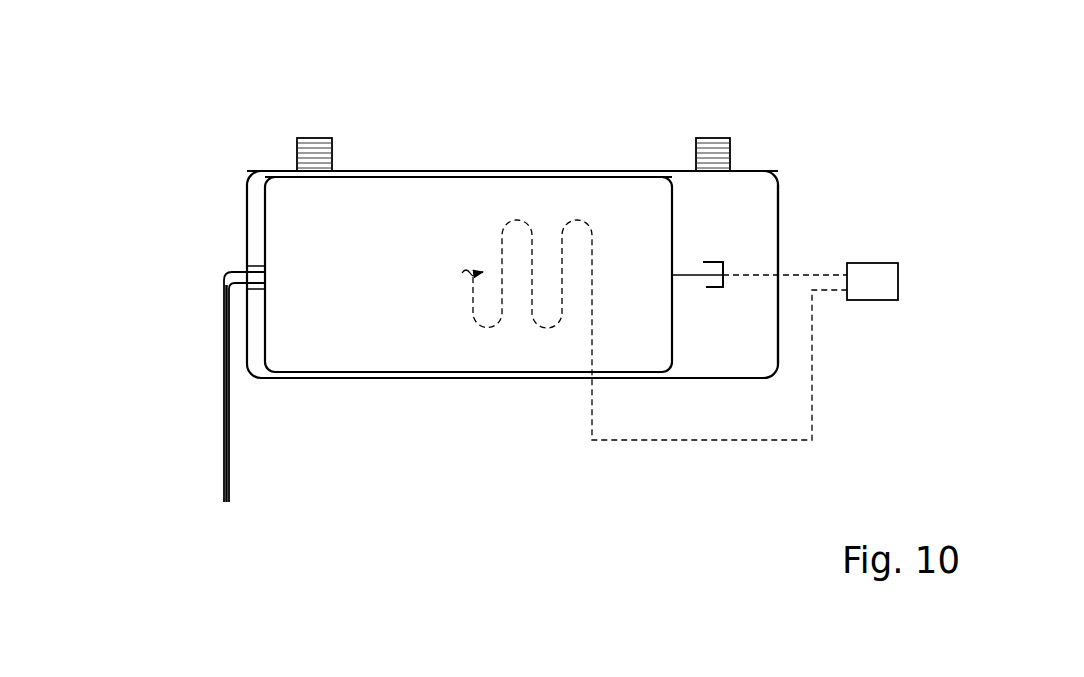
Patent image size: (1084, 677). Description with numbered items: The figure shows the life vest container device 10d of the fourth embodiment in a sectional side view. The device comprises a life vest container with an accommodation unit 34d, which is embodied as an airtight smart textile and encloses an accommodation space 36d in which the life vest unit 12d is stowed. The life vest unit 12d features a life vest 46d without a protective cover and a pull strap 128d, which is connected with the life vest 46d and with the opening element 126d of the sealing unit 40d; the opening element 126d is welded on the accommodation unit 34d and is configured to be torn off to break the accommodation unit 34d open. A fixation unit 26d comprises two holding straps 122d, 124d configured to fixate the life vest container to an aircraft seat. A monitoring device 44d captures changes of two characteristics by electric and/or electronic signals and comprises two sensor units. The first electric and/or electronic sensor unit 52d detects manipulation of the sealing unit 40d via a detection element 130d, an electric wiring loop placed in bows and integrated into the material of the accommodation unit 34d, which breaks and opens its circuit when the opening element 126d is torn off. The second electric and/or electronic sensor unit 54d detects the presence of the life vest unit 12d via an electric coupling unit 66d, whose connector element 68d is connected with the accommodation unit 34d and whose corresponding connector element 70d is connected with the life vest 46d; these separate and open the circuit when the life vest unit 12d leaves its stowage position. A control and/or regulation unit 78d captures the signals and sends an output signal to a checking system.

The life vest container device 10d is at (228, 115).
The life vest unit 12d is at (680, 210).
The fixation unit 26d is at (282, 162).
The accommodation unit 34d is at (333, 378).
The accommodation space 36d is at (758, 191).
The sealing unit 40d is at (226, 268).
The monitoring device 44d is at (467, 130).
The life vest 46d is at (412, 282).
The first electric and/or electronic sensor unit 52d is at (505, 337).
The second electric and/or electronic sensor unit 54d is at (748, 301).
The electric coupling unit 66d is at (726, 257).
The connector element 68d is at (723, 290).
The corresponding connector element 70d is at (713, 288).
The control and/or regulation unit 78d is at (873, 282).
The holding strap 122d is at (310, 155).
The holding strap 124d is at (710, 153).
The opening element 126d is at (243, 270).
The pull strap 128d is at (246, 265).
The detection element 130d is at (510, 220).